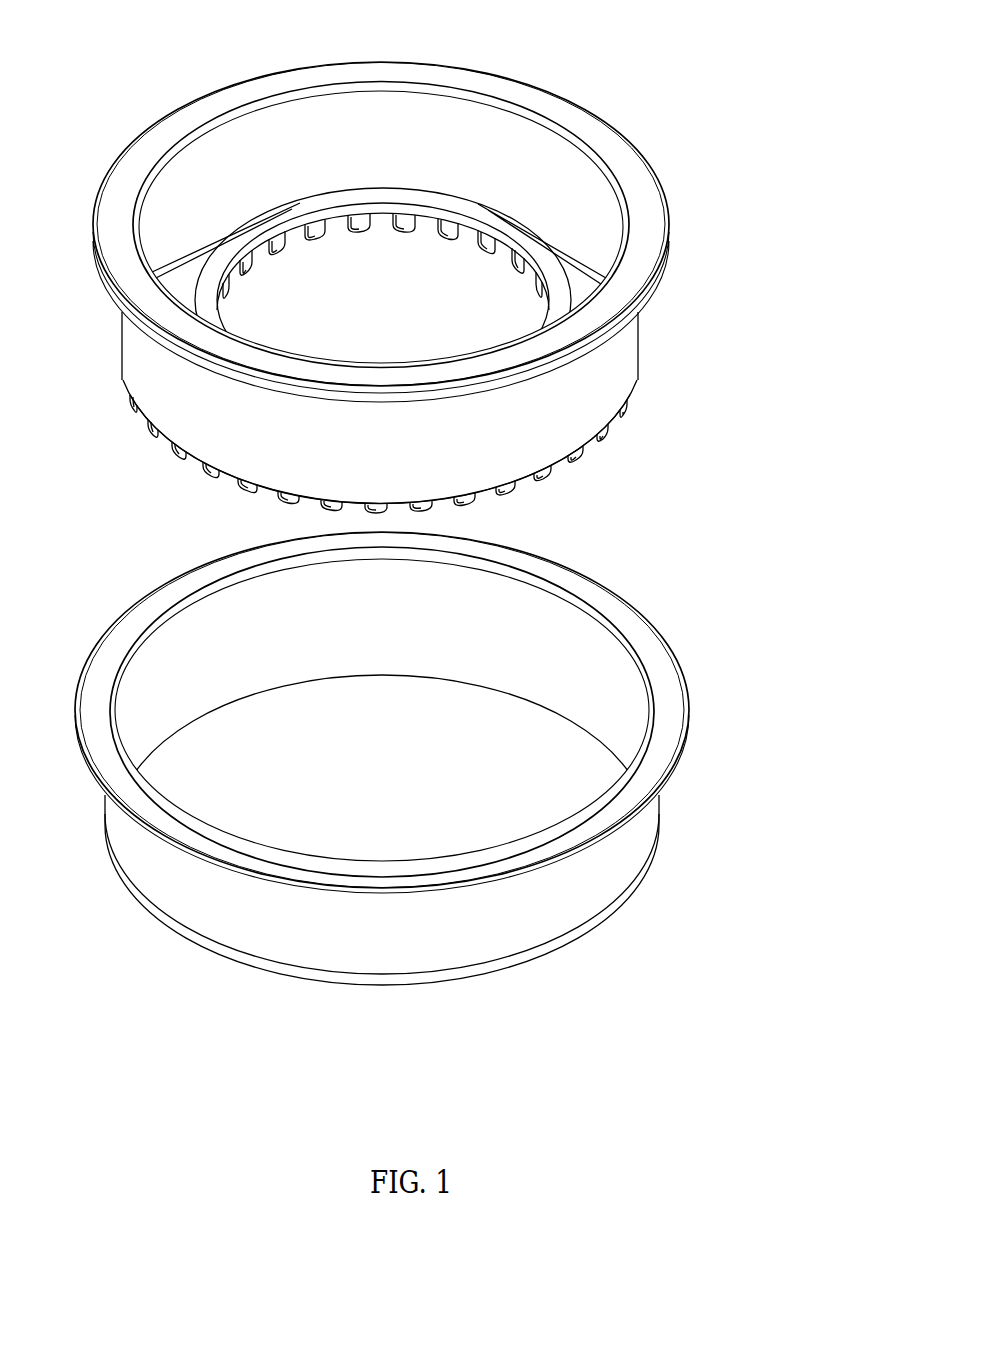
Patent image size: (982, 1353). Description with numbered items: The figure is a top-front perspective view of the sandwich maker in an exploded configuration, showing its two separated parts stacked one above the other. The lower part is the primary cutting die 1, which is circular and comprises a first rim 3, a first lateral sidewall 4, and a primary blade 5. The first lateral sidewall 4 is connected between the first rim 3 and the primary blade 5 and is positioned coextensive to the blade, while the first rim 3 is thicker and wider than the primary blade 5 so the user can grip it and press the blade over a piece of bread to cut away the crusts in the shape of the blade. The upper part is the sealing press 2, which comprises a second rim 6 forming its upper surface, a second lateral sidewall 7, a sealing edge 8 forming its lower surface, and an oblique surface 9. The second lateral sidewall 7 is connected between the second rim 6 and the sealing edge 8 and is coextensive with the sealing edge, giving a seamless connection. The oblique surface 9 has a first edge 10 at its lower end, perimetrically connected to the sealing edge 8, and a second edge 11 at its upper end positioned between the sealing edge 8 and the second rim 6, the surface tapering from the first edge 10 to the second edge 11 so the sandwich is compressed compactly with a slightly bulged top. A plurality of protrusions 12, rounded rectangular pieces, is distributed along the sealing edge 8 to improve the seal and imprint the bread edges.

The primary cutting die 1 is at (437, 760).
The sealing press 2 is at (430, 273).
The first rim 3 is at (658, 783).
The first lateral sidewall 4 is at (630, 857).
The primary blade 5 is at (543, 948).
The second rim 6 is at (668, 253).
The second lateral sidewall 7 is at (610, 363).
The sealing edge 8 is at (596, 442).
The oblique surface 9 is at (189, 278).
The first edge 10 is at (600, 278).
The second edge 11 is at (409, 180).
The plurality of protrusions 12 is at (155, 430).